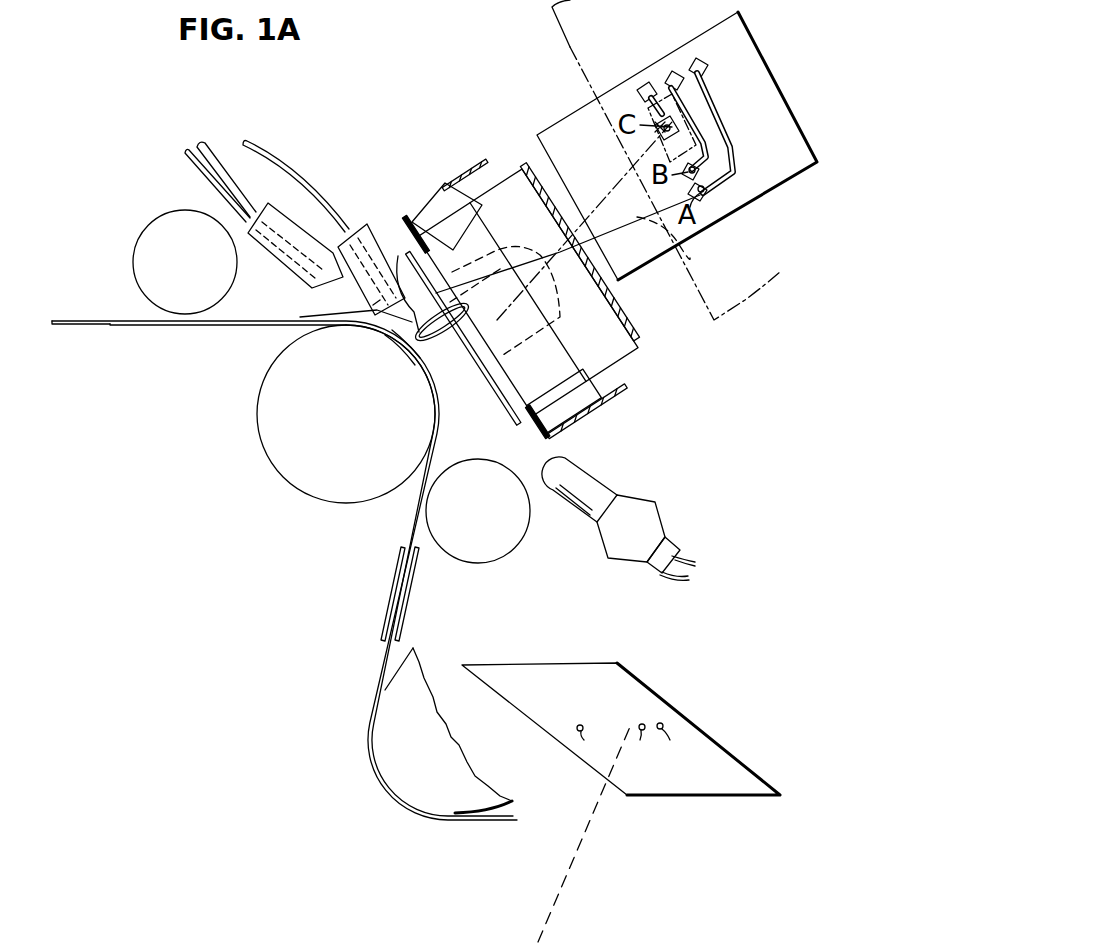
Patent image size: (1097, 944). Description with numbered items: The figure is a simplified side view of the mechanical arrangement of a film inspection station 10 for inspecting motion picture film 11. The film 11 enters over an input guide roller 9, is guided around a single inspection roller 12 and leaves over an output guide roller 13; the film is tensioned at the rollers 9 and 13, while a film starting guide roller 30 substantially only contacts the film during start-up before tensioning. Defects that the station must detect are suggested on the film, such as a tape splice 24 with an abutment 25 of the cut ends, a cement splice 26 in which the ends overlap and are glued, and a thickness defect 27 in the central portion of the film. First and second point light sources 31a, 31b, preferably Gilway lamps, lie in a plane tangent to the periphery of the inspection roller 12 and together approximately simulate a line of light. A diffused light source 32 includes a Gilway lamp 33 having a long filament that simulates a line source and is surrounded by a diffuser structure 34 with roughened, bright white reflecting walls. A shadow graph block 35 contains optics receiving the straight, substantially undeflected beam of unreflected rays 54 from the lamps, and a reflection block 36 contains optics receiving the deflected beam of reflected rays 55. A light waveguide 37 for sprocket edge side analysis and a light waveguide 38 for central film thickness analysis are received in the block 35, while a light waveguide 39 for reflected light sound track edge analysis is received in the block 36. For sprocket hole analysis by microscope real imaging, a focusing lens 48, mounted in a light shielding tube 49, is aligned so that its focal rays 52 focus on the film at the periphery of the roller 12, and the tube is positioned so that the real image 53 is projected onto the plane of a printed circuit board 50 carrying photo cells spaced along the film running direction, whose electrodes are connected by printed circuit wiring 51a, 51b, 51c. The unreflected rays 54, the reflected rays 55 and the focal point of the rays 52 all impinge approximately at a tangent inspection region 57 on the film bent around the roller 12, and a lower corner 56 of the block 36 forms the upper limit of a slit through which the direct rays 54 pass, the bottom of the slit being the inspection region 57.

The input guide roller 9 is at (196, 273).
The film inspection station 10 is at (415, 148).
The motion picture film 11 is at (176, 331).
The inspection roller 12 is at (314, 426).
The output guide roller 13 is at (438, 764).
The tape splice 24 is at (404, 630).
The abutment of cut ends 25 is at (398, 596).
The cement splice 26 is at (128, 321).
The thickness defect 27 is at (92, 320).
The film starting guide roller 30 is at (478, 511).
The first point light source 31a is at (587, 478).
The second point light source 31b is at (605, 487).
The diffused light source 32 is at (618, 363).
The Gilway lamp 33 is at (528, 391).
The diffuser structure 34 is at (620, 323).
The shadow graph block 35 is at (245, 227).
The reflection block 36 is at (360, 223).
The light waveguide 37 is at (182, 157).
The light waveguide 38 is at (227, 157).
The light waveguide 39 is at (277, 160).
The focusing lens 48 is at (446, 335).
The light shielding tube 49 is at (490, 256).
The printed circuit board 50 is at (788, 170).
The printed circuit wiring 51a is at (718, 128).
The printed circuit wiring 51b is at (683, 103).
The printed circuit wiring 51c is at (662, 108).
The focal rays 52 is at (687, 250).
The real image 53 is at (572, 48).
The unreflected rays 54 is at (375, 294).
The reflected rays 55 is at (398, 258).
The lower corner of optical block 56 is at (373, 305).
The inspection region 57 is at (388, 358).